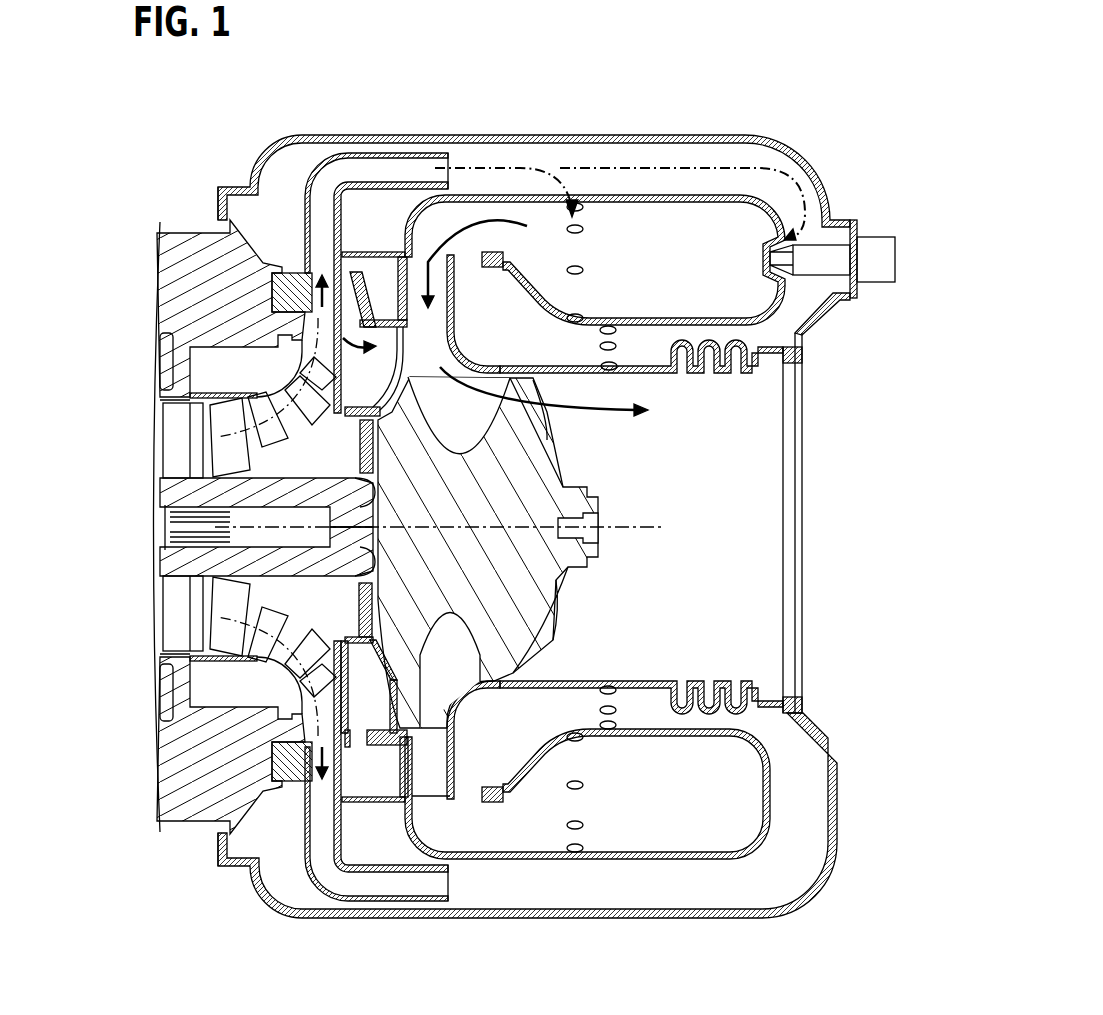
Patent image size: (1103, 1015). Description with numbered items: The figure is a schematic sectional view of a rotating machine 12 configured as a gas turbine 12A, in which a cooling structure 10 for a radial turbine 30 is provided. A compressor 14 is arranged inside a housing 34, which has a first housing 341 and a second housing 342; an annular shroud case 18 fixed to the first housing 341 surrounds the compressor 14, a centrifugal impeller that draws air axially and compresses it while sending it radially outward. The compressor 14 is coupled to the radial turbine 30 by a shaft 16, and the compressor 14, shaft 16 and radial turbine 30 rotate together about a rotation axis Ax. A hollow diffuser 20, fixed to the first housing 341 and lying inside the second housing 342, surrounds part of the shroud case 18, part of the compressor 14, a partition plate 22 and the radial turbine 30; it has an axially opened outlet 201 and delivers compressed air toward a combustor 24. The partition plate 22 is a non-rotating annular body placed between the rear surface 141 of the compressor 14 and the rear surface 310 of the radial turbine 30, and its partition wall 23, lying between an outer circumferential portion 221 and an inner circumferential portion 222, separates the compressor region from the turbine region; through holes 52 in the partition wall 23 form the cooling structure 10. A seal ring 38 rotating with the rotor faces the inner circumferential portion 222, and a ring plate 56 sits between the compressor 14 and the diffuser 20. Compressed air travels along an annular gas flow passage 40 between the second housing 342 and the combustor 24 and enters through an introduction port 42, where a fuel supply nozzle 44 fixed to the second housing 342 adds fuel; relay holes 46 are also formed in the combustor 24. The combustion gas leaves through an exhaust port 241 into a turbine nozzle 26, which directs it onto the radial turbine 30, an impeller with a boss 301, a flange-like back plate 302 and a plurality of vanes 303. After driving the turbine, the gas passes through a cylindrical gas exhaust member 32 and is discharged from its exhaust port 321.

The rotating machine 12 is at (627, 54).
The gas turbine 12A is at (663, 54).
The compressor 14 is at (200, 431).
The shaft 16 is at (279, 537).
The shroud case 18 is at (250, 393).
The diffuser 20 is at (397, 150).
The outlet 201 is at (450, 165).
The partition plate 22 is at (378, 418).
The outer circumferential portion 221 is at (330, 232).
The inner circumferential portion 222 is at (357, 420).
The partition wall 23 is at (403, 373).
The combustor 24 is at (658, 193).
The exhaust port 241 is at (423, 252).
The turbine nozzle 26 is at (458, 313).
The radial turbine 30 is at (606, 506).
The boss 301 is at (517, 550).
The back plate 302 is at (410, 396).
The vanes 303 is at (548, 458).
The rear surface 310 is at (383, 418).
The gas exhaust member 32 is at (627, 367).
The exhaust port 321 is at (770, 478).
The housing 34 is at (326, 82).
The first housing 341 is at (237, 253).
The second housing 342 is at (301, 134).
The seal ring 38 is at (363, 603).
The gas flow passage 40 is at (600, 178).
The introduction port 42 is at (780, 277).
The fuel supply nozzle 44 is at (812, 250).
The relay holes 46 is at (577, 200).
The through holes 52 is at (401, 345).
The ring plate 56 is at (348, 310).
The cooling structure 10 is at (403, 372).
The rear surface 141 is at (347, 665).
The rotation axis Ax is at (438, 526).